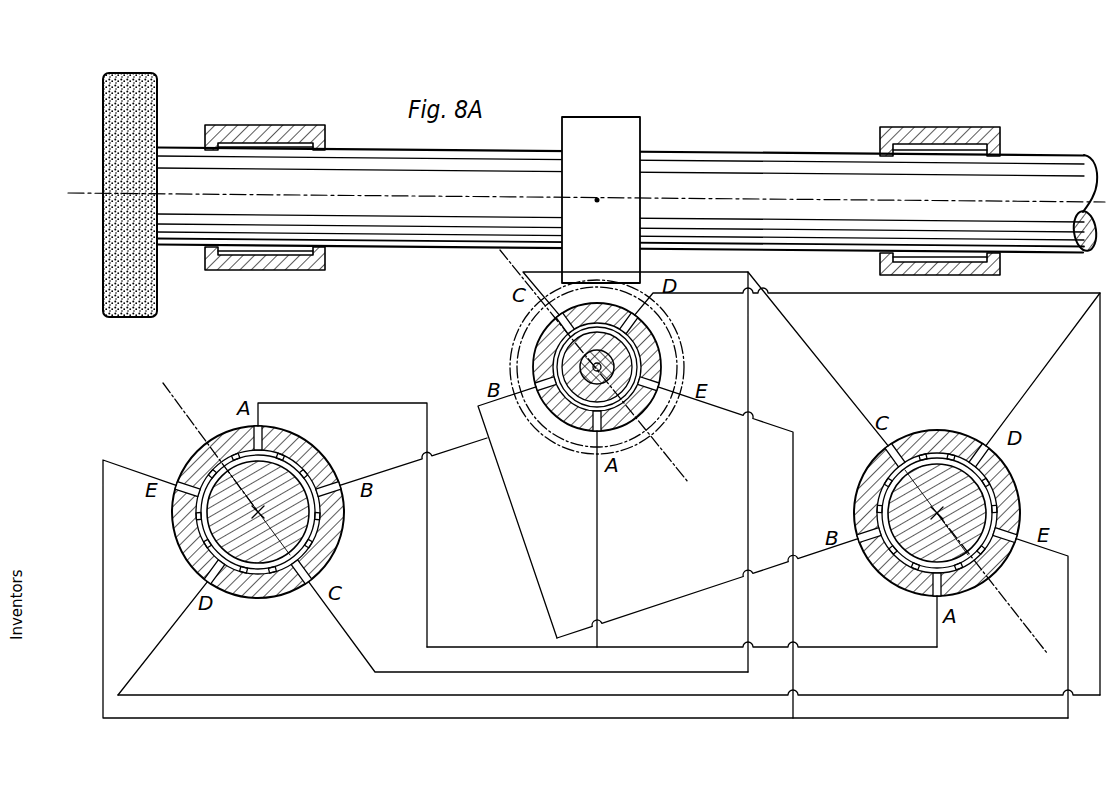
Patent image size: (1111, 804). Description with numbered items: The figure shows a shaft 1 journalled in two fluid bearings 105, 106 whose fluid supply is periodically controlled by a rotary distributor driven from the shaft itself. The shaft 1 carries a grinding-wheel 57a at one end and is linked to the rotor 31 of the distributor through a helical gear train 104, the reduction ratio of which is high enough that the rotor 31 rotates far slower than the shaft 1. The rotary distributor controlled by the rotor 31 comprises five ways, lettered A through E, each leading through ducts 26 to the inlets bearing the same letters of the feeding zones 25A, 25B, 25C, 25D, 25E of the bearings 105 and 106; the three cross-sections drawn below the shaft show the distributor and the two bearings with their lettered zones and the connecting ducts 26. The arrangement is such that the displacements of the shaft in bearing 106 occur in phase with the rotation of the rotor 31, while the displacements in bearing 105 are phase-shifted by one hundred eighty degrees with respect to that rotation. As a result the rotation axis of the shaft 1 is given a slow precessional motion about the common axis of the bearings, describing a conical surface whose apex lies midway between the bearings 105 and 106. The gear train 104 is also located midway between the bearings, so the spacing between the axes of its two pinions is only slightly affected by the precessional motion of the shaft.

The shaft 1 is at (781, 159).
The grinding-wheel 57a is at (142, 284).
The helical gear train 104 is at (628, 130).
The fluid bearing 105 is at (256, 125).
The fluid bearing 106 is at (950, 134).
The rotor 31 is at (618, 358).
The ducts 26 is at (798, 295).
The feeding zone 25A is at (266, 432).
The feeding zone 25B is at (330, 496).
The feeding zone 25C is at (312, 570).
The feeding zone 25D is at (222, 590).
The feeding zone 25E is at (190, 500).